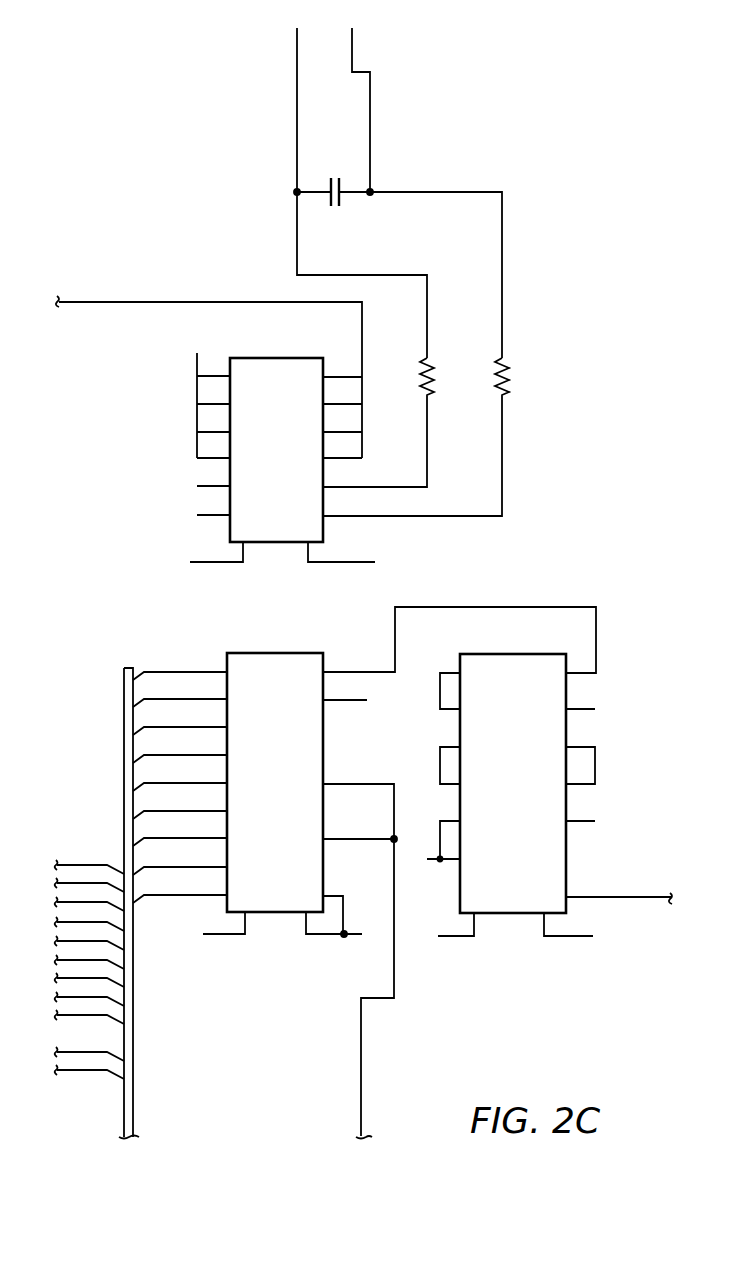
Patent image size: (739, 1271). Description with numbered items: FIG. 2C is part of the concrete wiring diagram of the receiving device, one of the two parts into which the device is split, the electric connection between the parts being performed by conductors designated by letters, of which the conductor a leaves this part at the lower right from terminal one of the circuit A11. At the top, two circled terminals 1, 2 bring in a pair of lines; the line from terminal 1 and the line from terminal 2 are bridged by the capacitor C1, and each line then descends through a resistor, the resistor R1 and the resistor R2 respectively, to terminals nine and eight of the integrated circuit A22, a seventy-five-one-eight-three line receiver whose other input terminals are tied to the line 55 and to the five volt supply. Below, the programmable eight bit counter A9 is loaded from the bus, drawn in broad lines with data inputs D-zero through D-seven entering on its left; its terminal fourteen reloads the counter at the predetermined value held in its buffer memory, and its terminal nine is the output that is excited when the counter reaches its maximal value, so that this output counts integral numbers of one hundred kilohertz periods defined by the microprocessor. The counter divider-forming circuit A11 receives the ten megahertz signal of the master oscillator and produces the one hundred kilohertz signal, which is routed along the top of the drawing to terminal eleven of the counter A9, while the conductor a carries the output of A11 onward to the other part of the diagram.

The connector terminal 1 is at (352, 179).
The connector terminal 2 is at (352, 96).
The line 55 is at (209, 368).
The capacitor C1 is at (398, 256).
The resistor R1 is at (391, 422).
The resistor R2 is at (429, 437).
The line receiver 75183 A22 is at (274, 453).
The counter A9 is at (364, 862).
The counter divider-forming circuit A11 is at (509, 801).
The conductor a is at (619, 889).